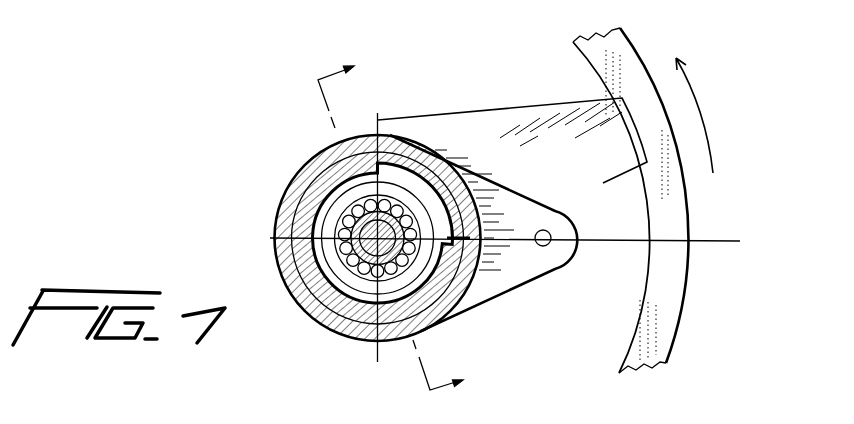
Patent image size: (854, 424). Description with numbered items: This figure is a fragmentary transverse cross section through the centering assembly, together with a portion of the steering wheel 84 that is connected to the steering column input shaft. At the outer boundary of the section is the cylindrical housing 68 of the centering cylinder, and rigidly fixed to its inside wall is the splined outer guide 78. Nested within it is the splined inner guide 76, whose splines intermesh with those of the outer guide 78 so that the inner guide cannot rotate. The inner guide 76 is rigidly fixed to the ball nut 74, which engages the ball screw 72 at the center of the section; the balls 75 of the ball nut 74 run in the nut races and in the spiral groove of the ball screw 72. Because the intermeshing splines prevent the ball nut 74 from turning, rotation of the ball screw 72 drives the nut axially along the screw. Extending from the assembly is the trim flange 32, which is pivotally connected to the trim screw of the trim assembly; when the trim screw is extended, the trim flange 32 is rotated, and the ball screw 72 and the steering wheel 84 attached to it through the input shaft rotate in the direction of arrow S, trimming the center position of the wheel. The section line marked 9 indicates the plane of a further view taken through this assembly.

The trim flange 32 is at (517, 293).
The cylindrical housing 68 is at (296, 176).
The ball screw 72 is at (330, 293).
The ball nut 74 is at (412, 203).
The balls 75 is at (425, 257).
The splined inner guide 76 is at (442, 218).
The outer guide 78 is at (307, 250).
The steering wheel 84 is at (678, 330).
The section line 9- 9 is at (399, 220).
The arrow S is at (697, 104).